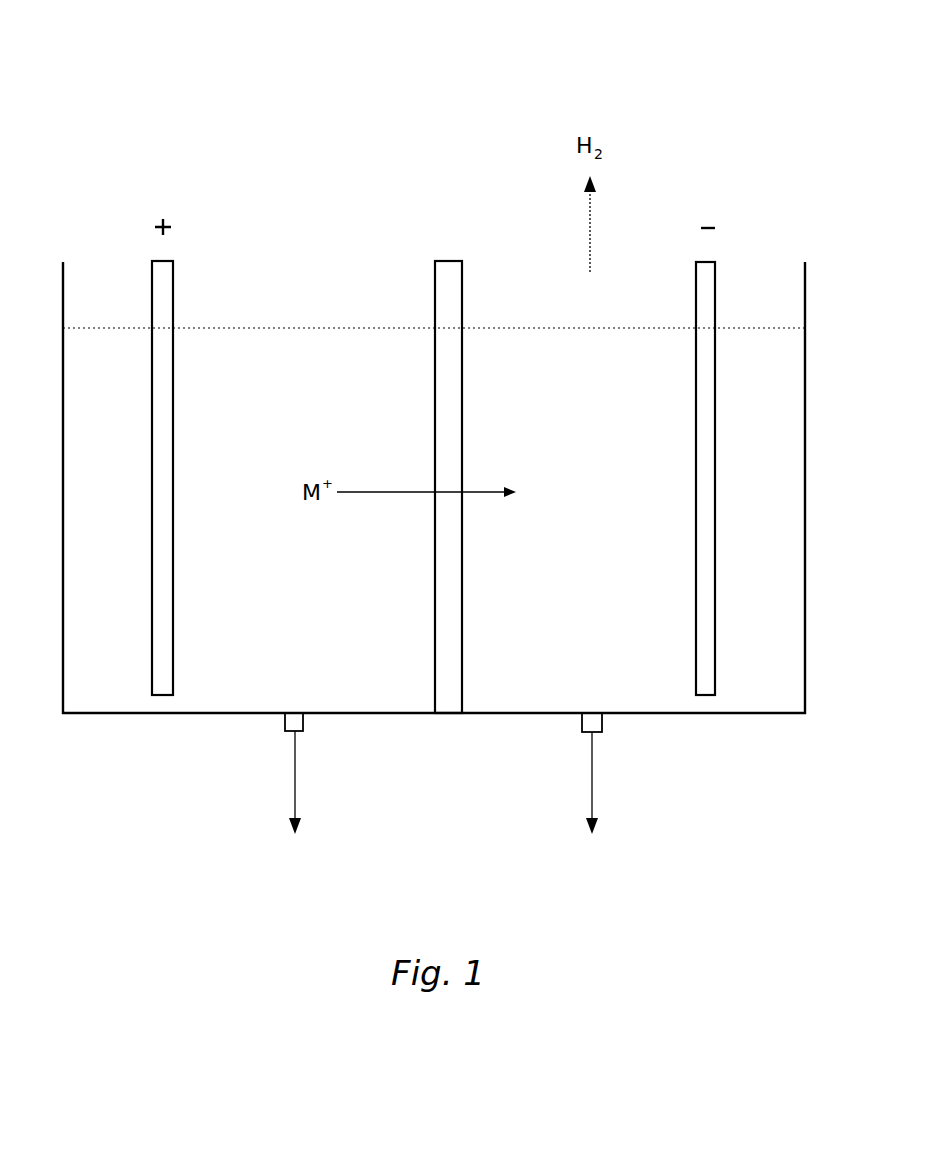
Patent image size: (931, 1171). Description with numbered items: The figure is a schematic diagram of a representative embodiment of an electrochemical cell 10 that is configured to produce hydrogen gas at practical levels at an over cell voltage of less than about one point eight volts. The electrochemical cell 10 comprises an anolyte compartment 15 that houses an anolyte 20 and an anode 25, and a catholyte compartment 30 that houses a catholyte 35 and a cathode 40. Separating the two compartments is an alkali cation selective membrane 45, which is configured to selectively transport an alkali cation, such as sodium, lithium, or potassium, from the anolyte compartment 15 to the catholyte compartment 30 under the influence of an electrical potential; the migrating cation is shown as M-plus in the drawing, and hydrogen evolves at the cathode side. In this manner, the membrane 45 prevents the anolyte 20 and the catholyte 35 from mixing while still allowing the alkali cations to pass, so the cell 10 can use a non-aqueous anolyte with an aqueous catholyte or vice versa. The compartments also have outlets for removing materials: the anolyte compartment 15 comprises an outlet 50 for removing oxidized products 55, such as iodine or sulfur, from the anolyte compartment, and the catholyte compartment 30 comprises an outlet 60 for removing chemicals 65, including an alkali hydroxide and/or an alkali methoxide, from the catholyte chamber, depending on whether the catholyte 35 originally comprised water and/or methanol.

The electrochemical cell 10 is at (215, 92).
The anolyte compartment 15 is at (257, 476).
The anolyte 20 is at (243, 600).
The anode 25 is at (162, 425).
The catholyte compartment 30 is at (594, 476).
The catholyte 35 is at (580, 600).
The cathode 40 is at (696, 366).
The alkali cation selective membrane 45 is at (447, 335).
The outlet 50 is at (303, 722).
The oxidized products 55 is at (295, 794).
The outlet 60 is at (602, 722).
The chemicals 65 is at (592, 795).